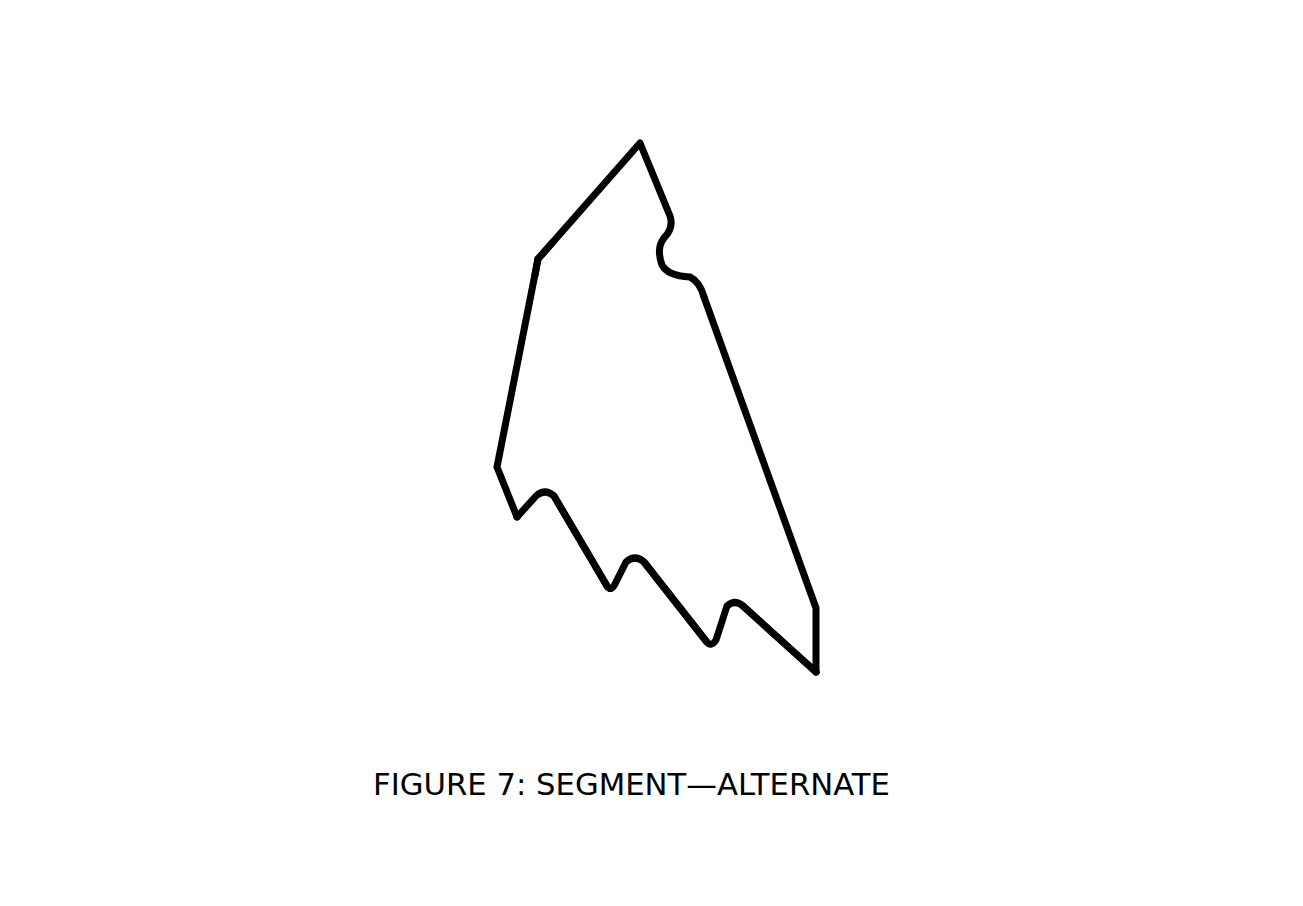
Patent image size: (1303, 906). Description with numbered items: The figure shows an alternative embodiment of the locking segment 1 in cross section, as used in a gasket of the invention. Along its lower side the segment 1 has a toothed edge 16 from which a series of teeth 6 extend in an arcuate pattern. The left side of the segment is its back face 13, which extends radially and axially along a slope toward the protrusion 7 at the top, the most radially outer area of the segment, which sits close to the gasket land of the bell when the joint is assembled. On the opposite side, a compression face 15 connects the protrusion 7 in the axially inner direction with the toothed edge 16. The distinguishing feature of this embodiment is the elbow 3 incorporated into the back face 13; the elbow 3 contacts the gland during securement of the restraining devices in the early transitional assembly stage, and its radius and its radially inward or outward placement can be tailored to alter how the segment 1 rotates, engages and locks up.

The segment 1 is at (672, 385).
The elbow 3 is at (528, 258).
The teeth 6 is at (812, 675).
The protrusion 7 is at (759, 169).
The back face 13 is at (500, 378).
The compression face 15 is at (786, 474).
The toothed edge 16 is at (823, 697).